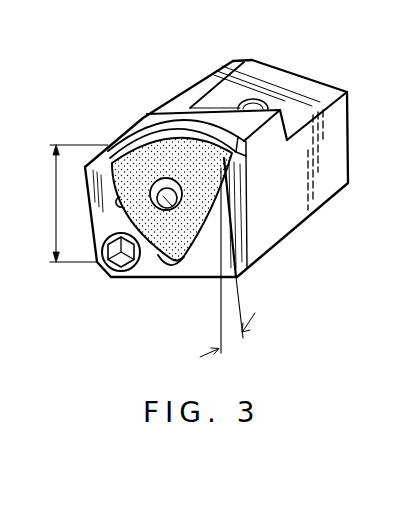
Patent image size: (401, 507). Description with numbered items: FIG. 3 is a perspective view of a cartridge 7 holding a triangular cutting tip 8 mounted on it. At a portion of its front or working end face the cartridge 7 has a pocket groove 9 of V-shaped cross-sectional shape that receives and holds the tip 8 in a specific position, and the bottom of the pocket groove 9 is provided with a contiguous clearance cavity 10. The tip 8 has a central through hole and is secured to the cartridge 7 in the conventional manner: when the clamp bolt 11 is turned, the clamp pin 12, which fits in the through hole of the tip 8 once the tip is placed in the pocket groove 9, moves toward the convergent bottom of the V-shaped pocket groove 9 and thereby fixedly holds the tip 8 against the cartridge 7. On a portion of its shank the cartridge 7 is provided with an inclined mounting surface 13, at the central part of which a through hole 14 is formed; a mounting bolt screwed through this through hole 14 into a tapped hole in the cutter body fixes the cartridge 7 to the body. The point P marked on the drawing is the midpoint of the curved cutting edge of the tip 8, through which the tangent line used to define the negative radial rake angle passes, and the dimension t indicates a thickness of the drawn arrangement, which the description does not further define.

The cartridge 7 is at (263, 58).
The tip 8 is at (200, 182).
The pocket groove 9 is at (120, 205).
The clearance cavity 10 is at (177, 267).
The clamp bolt 11 is at (122, 269).
The clamp pin 12 is at (175, 209).
The inclined mounting surface 13 is at (310, 87).
The through hole 14 is at (242, 100).
The midpoint of the curved cutting edge P is at (153, 128).
The thickness t is at (77, 203).